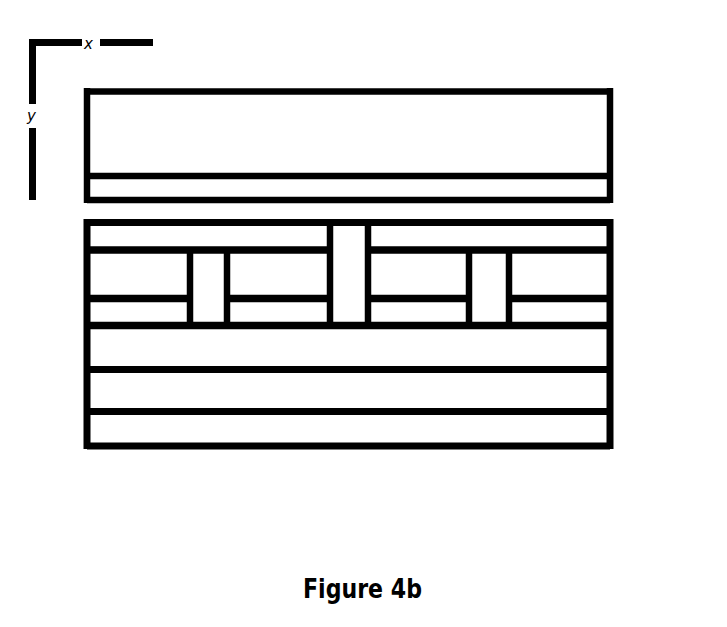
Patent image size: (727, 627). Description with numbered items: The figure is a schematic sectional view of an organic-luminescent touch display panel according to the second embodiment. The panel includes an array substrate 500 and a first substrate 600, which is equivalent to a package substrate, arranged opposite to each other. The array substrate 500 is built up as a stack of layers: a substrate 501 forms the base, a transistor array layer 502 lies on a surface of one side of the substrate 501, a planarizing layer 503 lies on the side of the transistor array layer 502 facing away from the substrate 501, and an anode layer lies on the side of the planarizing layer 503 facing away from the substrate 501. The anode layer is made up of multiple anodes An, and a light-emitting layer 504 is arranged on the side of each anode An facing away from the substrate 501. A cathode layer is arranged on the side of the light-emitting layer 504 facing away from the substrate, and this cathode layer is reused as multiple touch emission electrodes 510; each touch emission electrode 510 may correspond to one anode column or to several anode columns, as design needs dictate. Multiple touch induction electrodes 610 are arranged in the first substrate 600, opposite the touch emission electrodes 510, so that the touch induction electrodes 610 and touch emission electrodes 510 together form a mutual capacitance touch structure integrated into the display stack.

The array substrate 500 is at (88, 377).
The substrate 501 is at (595, 440).
The transistor array layer 502 is at (590, 400).
The planarizing layer 503 is at (588, 360).
The light-emitting layer 504 is at (586, 285).
The anode An is at (586, 315).
The touch emission electrode 510 is at (592, 237).
The first substrate 600 is at (590, 141).
The touch induction electrode 610 is at (594, 195).